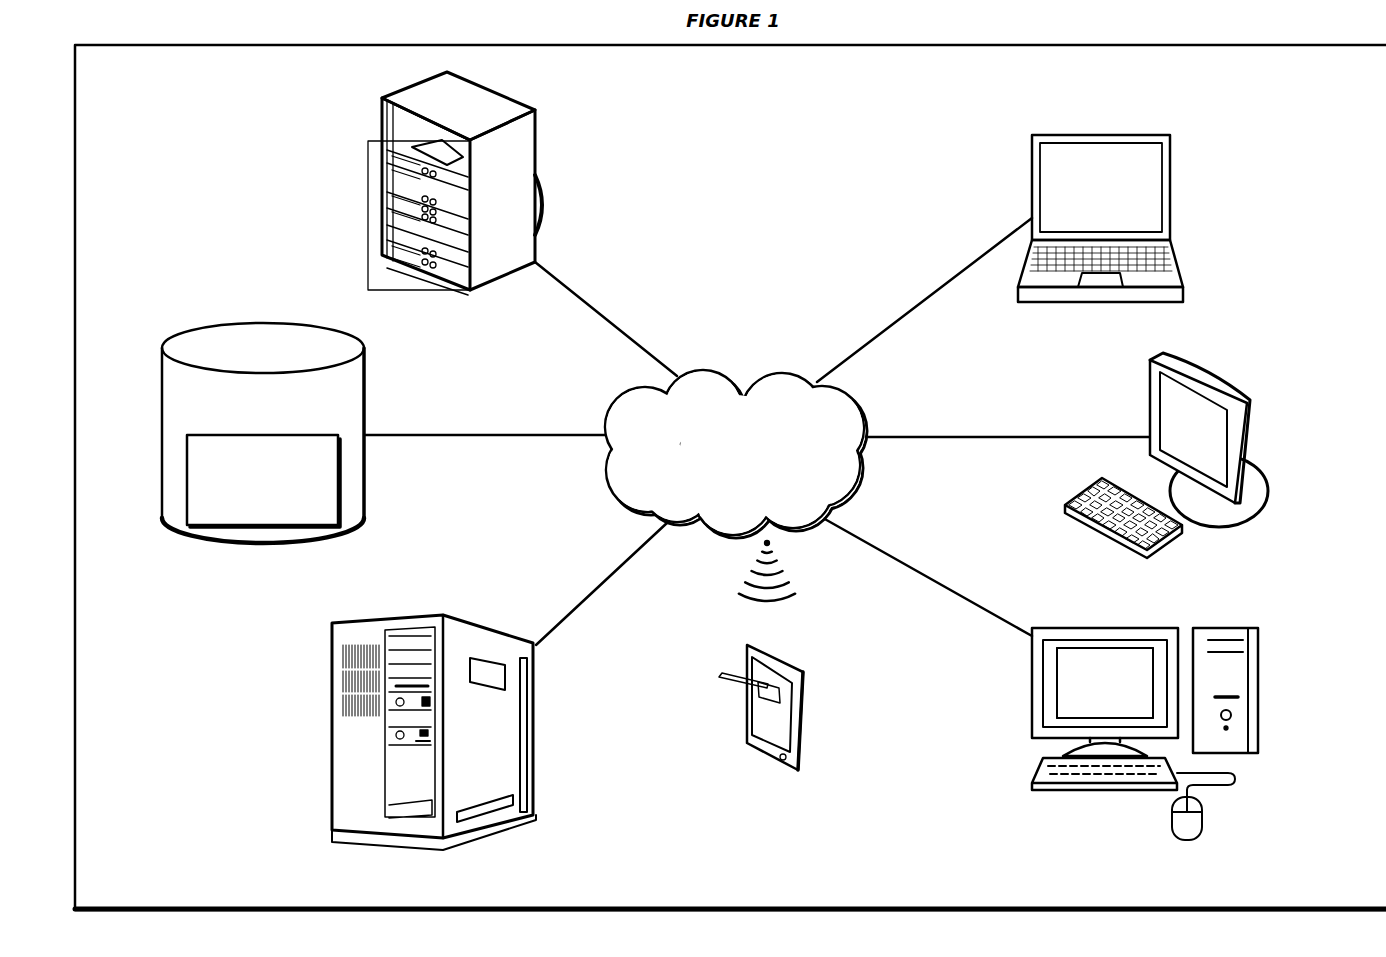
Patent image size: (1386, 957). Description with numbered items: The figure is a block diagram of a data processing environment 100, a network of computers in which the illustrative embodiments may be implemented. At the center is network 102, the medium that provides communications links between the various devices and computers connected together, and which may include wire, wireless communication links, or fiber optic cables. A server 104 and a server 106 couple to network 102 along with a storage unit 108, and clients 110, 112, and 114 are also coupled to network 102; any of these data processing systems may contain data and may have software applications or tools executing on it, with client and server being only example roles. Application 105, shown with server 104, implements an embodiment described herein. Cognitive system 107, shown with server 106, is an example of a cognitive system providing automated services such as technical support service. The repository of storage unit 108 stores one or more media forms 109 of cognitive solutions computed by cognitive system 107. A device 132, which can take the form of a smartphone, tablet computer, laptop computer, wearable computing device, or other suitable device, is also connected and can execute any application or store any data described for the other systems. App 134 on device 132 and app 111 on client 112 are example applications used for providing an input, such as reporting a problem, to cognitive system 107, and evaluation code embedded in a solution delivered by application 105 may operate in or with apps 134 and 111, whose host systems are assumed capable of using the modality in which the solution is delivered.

The data processing environment 100 is at (730, 477).
The network 102 is at (736, 454).
The server 104 is at (455, 193).
The application 105 is at (463, 157).
The server 106 is at (434, 747).
The cognitive system 107 is at (507, 672).
The storage unit 108 is at (263, 433).
The media forms 109 is at (263, 481).
The client 110 is at (1180, 455).
The app 111 is at (1057, 691).
The client 112 is at (1145, 734).
The client 114 is at (1100, 218).
The device 132 is at (770, 728).
The app 134 is at (770, 701).